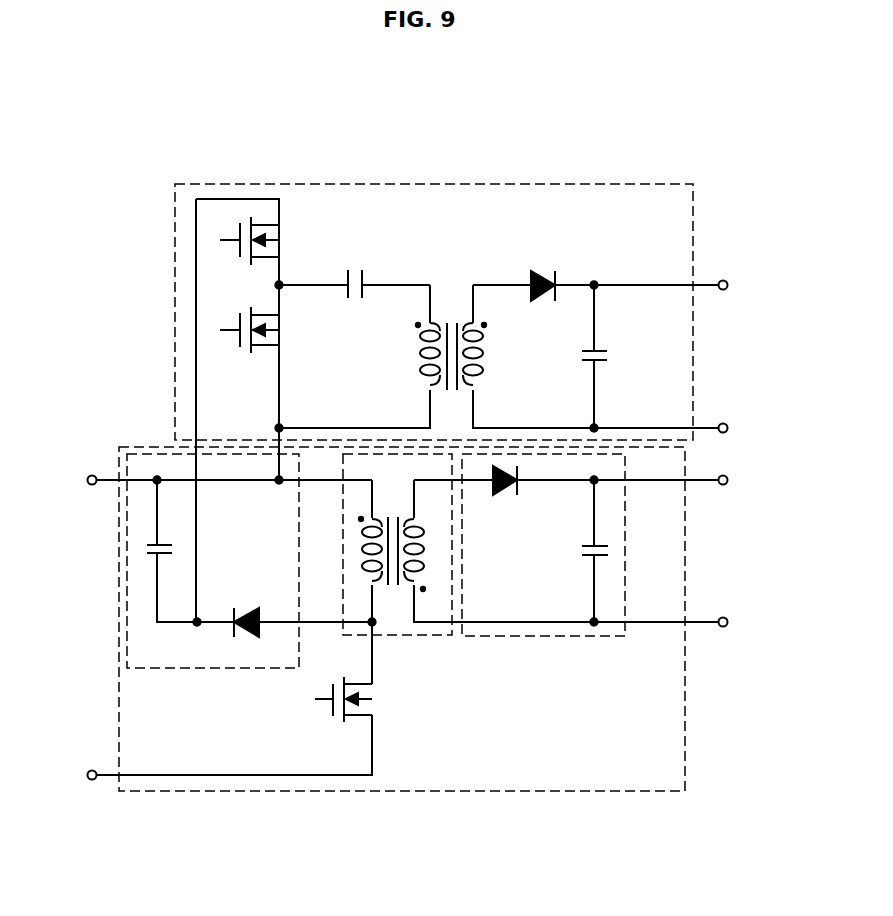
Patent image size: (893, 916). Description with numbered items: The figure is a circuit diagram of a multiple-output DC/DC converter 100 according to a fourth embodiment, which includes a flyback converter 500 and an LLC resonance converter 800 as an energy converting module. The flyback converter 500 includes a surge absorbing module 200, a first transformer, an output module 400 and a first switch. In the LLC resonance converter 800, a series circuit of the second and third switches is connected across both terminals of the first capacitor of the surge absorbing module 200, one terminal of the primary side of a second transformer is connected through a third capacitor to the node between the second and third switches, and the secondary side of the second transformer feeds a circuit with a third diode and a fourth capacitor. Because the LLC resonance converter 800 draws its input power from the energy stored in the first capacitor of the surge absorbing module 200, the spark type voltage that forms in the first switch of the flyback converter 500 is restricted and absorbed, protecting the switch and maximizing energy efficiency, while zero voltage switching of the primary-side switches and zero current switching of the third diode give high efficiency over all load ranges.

The multiple-output DC/DC converter 100 is at (123, 91).
The surge absorbing module 200 is at (213, 670).
The output module 400 is at (541, 637).
The flyback converter 500 is at (463, 793).
The LLC resonance converter 800 is at (445, 184).